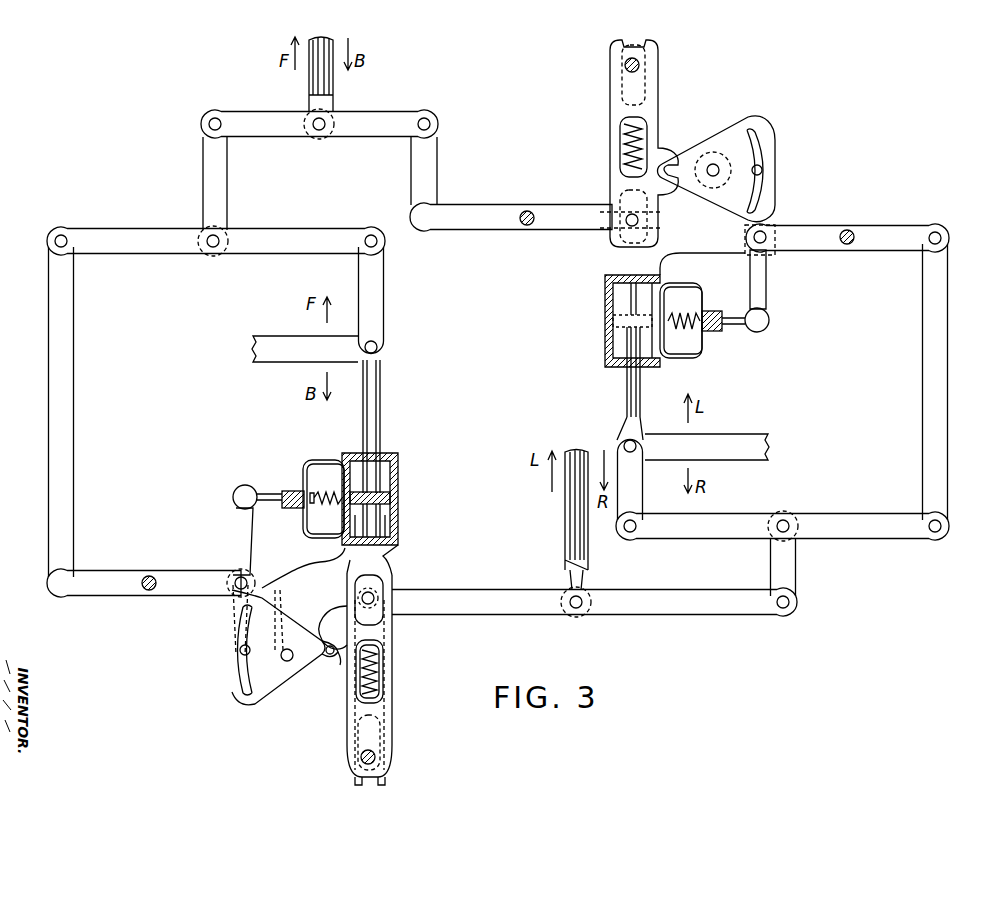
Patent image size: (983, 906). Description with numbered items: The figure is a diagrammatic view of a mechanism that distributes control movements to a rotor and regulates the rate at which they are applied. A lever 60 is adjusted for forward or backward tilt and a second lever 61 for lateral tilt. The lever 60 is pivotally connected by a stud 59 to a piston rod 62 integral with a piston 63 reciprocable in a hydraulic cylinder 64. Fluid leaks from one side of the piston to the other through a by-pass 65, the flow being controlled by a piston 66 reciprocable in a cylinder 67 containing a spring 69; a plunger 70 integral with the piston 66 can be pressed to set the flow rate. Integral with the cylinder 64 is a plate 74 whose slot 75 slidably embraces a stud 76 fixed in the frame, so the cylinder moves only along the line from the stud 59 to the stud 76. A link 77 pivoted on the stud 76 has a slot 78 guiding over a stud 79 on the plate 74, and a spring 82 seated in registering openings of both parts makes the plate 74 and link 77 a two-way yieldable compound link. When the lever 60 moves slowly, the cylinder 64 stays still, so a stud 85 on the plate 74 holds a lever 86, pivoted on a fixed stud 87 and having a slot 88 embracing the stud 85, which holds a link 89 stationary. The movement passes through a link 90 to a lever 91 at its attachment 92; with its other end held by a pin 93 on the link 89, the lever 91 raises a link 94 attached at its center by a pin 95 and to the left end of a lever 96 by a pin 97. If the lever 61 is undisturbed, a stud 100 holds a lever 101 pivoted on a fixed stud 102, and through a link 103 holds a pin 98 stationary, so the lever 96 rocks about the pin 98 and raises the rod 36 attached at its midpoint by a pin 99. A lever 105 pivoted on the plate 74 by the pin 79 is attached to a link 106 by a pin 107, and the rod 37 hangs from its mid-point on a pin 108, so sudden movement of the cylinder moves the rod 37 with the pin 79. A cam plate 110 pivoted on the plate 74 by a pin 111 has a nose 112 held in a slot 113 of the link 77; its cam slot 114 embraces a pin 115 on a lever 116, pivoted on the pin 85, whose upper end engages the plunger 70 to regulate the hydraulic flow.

The rod 36 is at (309, 88).
The rod 37 is at (565, 540).
The stud 59 is at (387, 350).
The lever 60 is at (270, 336).
The lever 61 is at (766, 435).
The piston rod 62 is at (380, 412).
The piston 63 is at (391, 508).
The hydraulic cylinder 64 is at (398, 464).
The by-pass 65 is at (310, 460).
The piston 66 is at (307, 478).
The cylinder 67 is at (288, 508).
The spring 69 is at (326, 511).
The plunger 70 is at (257, 489).
The plate 74 is at (393, 560).
The slot 75 is at (376, 781).
The stud 76 is at (376, 757).
The link 77 is at (346, 748).
The slot 78 is at (392, 630).
The stud 79 is at (355, 598).
The spring 82 is at (387, 672).
The stud 85 is at (237, 578).
The lever 86 is at (98, 572).
The stud 87 is at (147, 590).
The slot 88 is at (282, 576).
The link 89 is at (73, 448).
The link 90 is at (386, 301).
The lever 91 is at (270, 236).
The pivotal attachment 92 is at (368, 237).
The pin 93 is at (62, 236).
The link 94 is at (203, 172).
The pin 95 is at (208, 238).
The lever 96 is at (278, 136).
The pin 97 is at (209, 124).
The pin 98 is at (430, 121).
The pin 99 is at (322, 128).
The stud 100 is at (608, 232).
The lever 101 is at (484, 230).
The stud 102 is at (528, 225).
The link 103 is at (437, 184).
The lever 105 is at (492, 596).
The link 106 is at (796, 570).
The pin 107 is at (790, 602).
The pin 108 is at (582, 602).
The cam plate 110 is at (252, 702).
The pin 111 is at (287, 662).
The nose 112 is at (326, 655).
The slot 113 is at (337, 668).
The cam slot 114 is at (238, 675).
The pin 115 is at (240, 650).
The lever 116 is at (236, 540).